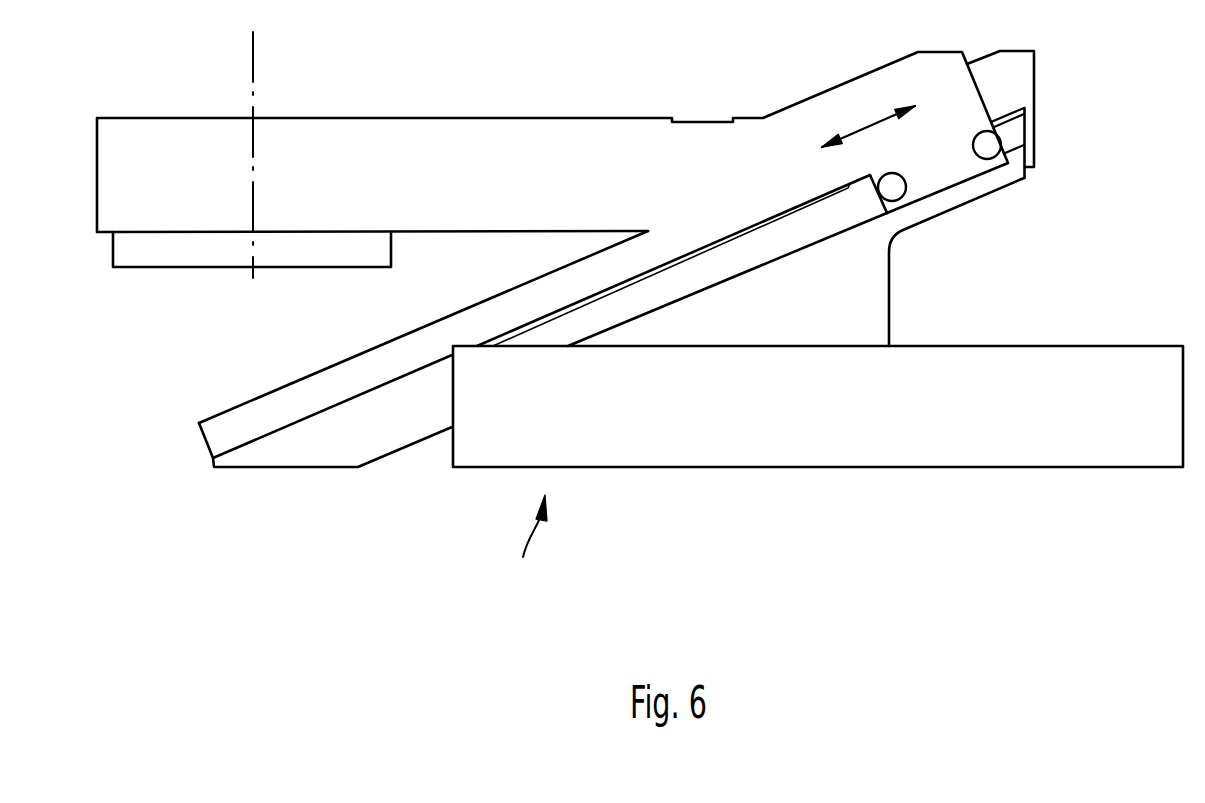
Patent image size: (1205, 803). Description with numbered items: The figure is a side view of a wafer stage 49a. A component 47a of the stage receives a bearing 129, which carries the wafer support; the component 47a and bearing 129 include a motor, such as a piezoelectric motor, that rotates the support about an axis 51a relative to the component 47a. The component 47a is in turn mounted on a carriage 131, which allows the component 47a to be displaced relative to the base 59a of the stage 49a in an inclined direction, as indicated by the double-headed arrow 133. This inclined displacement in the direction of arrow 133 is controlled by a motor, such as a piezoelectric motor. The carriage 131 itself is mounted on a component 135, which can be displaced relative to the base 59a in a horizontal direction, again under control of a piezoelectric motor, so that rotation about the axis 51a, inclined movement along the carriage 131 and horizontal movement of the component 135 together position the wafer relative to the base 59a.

The component 47a is at (97, 188).
The bearing 129 is at (113, 248).
The axis 51a is at (253, 55).
The carriage 131 is at (239, 404).
The arrow 133 is at (870, 122).
The component 135 is at (890, 292).
The base 59a is at (1107, 345).
The wafer stage 49a is at (527, 544).